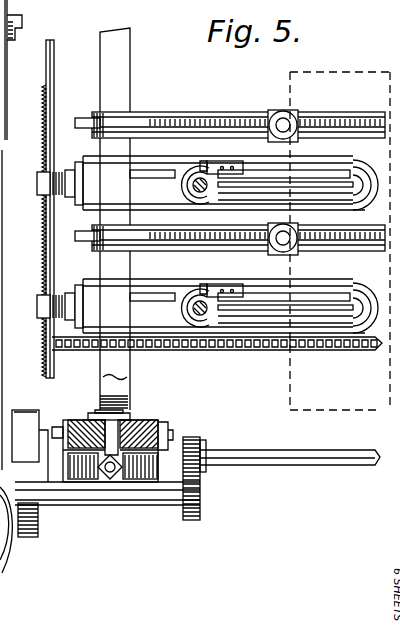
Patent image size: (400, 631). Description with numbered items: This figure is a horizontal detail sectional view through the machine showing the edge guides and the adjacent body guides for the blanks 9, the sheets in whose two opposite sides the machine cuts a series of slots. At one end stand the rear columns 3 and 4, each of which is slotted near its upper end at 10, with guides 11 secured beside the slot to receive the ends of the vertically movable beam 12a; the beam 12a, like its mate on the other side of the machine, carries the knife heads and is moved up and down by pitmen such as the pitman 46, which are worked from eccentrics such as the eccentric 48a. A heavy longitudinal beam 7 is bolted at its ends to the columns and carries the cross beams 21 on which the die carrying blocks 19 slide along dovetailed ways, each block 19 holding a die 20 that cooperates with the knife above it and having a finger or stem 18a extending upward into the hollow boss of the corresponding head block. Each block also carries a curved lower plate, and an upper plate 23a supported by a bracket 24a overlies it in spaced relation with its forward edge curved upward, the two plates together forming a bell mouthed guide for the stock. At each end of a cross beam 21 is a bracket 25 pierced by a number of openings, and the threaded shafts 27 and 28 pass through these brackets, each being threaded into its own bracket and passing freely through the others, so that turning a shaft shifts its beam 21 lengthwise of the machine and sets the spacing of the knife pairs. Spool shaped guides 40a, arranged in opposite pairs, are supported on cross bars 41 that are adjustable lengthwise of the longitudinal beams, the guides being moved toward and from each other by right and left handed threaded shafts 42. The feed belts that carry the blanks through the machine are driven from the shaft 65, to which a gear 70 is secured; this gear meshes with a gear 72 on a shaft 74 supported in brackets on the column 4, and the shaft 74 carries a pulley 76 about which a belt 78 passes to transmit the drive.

The rear column 3 is at (0, 592).
The rear column 4 is at (160, 432).
The beam 7 is at (218, 363).
The blank 9 is at (320, 410).
The slot 10 is at (135, 423).
The guide 11 is at (80, 398).
The beam 12a is at (115, 397).
The finger or stem 18a is at (208, 296).
The die carrying block 19 is at (332, 326).
The die 20 is at (280, 314).
The cross beam 21 is at (160, 285).
The plate 23a is at (241, 157).
The bracket 24a is at (208, 162).
The bracket 25 is at (38, 295).
The shaft 27 is at (72, 92).
The shaft 28 is at (42, 320).
The spool shaped guide 40a is at (292, 150).
The cross bar 41 is at (128, 252).
The right and left handed threaded shaft 42 is at (360, 128).
The pitman 46 is at (133, 468).
The eccentric 48a is at (112, 582).
The shaft 65 is at (260, 465).
The gear 70 is at (207, 445).
The gear 72 is at (190, 520).
The shaft 74 is at (105, 501).
The pulley 76 is at (38, 515).
The belt 78 is at (25, 409).